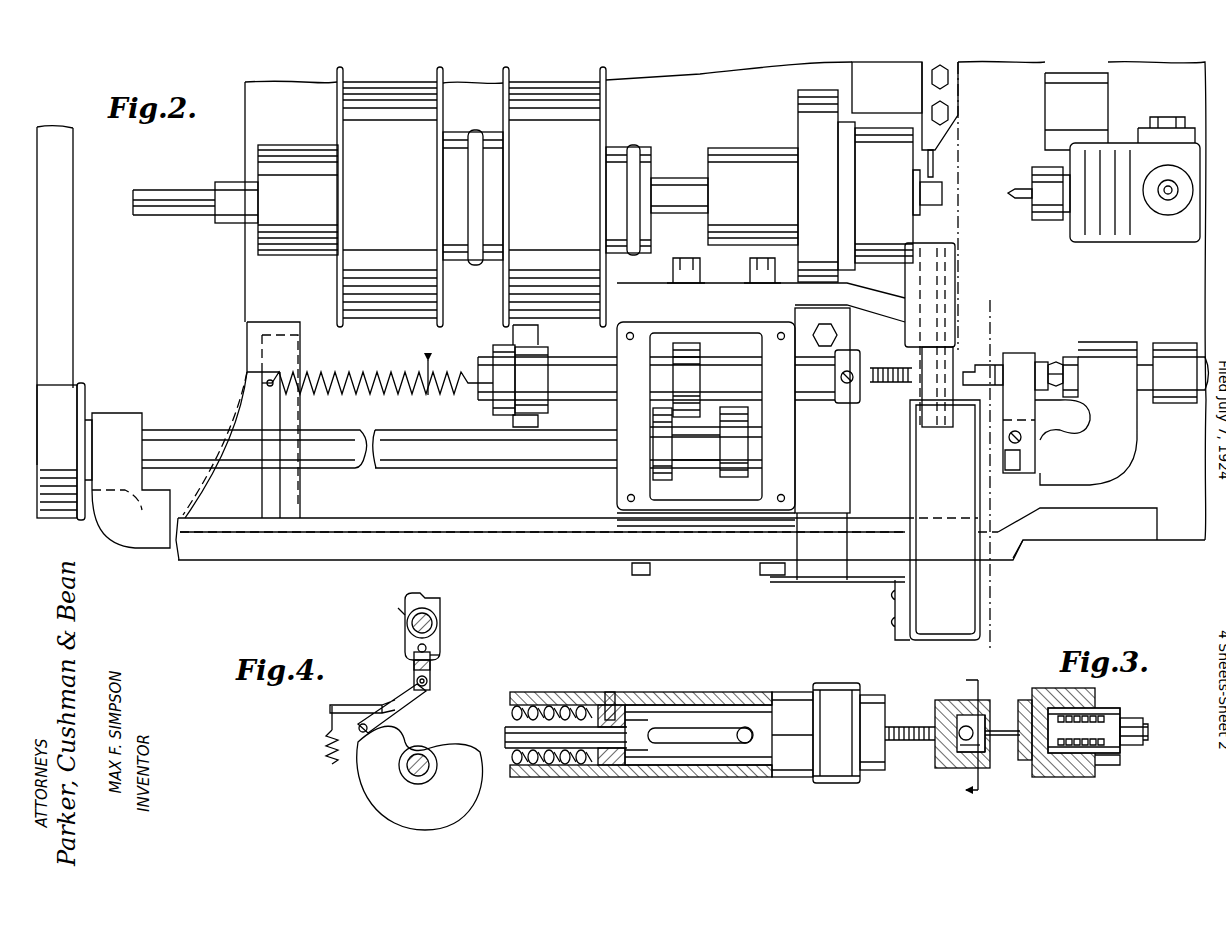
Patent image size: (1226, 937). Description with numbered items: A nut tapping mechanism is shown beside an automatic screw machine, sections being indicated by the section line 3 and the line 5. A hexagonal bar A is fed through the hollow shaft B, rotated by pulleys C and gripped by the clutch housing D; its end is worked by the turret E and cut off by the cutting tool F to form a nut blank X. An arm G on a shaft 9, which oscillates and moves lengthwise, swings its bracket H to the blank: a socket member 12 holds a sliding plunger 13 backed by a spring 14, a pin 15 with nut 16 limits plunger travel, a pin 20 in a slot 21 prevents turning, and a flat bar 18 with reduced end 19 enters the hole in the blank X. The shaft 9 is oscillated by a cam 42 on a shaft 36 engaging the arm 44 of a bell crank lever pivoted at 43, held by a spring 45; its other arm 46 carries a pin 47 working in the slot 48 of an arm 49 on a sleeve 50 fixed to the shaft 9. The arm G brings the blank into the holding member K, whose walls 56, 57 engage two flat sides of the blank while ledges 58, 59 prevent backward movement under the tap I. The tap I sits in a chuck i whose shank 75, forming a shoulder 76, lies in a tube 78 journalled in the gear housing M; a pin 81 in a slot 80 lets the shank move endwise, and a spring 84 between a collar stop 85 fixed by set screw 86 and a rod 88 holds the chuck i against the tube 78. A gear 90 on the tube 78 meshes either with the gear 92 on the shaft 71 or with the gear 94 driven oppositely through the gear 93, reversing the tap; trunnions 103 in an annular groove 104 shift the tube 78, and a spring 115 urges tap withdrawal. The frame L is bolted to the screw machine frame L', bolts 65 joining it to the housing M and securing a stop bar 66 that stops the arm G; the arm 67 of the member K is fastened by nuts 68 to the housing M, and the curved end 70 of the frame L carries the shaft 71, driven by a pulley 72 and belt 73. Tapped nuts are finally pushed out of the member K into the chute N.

In FIG. 2, the section line 3 is at (1150, 338).
In FIG. 2, the section line 5 is at (940, 98).
In FIG. 2, the shaft 9 is at (1072, 357).
In FIG. 4, the shaft 9 is at (432, 622).
In FIG. 2, the socket member 12 is at (1043, 370).
In FIG. 3, the socket member 12 is at (1105, 708).
In FIG. 3, the plunger 13 is at (1000, 731).
In FIG. 3, the spring 14 is at (1108, 760).
In FIG. 2, the pin 15 is at (1062, 395).
In FIG. 3, the pin 15 is at (1132, 718).
In FIG. 2, the nut 16 is at (1049, 385).
In FIG. 3, the nut 16 is at (1142, 740).
In FIG. 2, the flat bar 18 is at (978, 372).
In FIG. 3, the flat bar 18 is at (998, 740).
In FIG. 2, the reduced end 19 is at (968, 365).
In FIG. 3, the reduced end 19 is at (965, 755).
In FIG. 3, the pin 20 is at (1058, 700).
In FIG. 3, the slot 21 is at (1045, 775).
In FIG. 4, the shaft 36 is at (430, 758).
In FIG. 4, the cam 42 is at (420, 778).
In FIG. 4, the pivot 43 is at (430, 680).
In FIG. 4, the arm 44 is at (385, 698).
In FIG. 4, the spring 45 is at (325, 742).
In FIG. 4, the arm 46 is at (414, 665).
In FIG. 4, the pin 47 is at (428, 646).
In FIG. 4, the slot 48 is at (408, 625).
In FIG. 4, the arm 49 is at (434, 655).
In FIG. 4, the sleeve 50 is at (437, 617).
In FIG. 3, the side wall 56 is at (965, 725).
In FIG. 3, the side wall 57 is at (968, 752).
In FIG. 3, the ledge 58 is at (988, 732).
In FIG. 3, the ledge 59 is at (993, 760).
In FIG. 2, the bolts 65 is at (644, 578).
In FIG. 2, the stop bar 66 is at (1077, 533).
In FIG. 2, the rearwardly extending arm 67 is at (872, 294).
In FIG. 2, the bolts or nuts 68 is at (748, 268).
In FIG. 2, the curved end portion 70 is at (115, 418).
In FIG. 2, the shaft 71 is at (440, 457).
In FIG. 2, the pulley 72 is at (88, 390).
In FIG. 2, the belt 73 is at (60, 303).
In FIG. 3, the shank 75 is at (735, 712).
In FIG. 3, the annular shoulder 76 is at (768, 780).
In FIG. 2, the tube 78 is at (656, 378).
In FIG. 3, the tube 78 is at (680, 692).
In FIG. 3, the slot 80 is at (722, 747).
In FIG. 3, the pin 81 is at (742, 743).
In FIG. 3, the spring 84 is at (573, 762).
In FIG. 3, the stop 85 is at (607, 767).
In FIG. 3, the set screw 86 is at (610, 700).
In FIG. 3, the rod 88 is at (530, 750).
In FIG. 2, the gear 90 is at (690, 345).
In FIG. 2, the gear 92 is at (737, 478).
In FIG. 2, the gear 93 is at (658, 456).
In FIG. 2, the gear 94 is at (673, 454).
In FIG. 2, the trunnions 103 is at (542, 410).
In FIG. 2, the annular groove 104 is at (505, 366).
In FIG. 2, the spring 115 is at (377, 369).
In FIG. 2, the bar A is at (158, 191).
In FIG. 2, the hollow shaft B is at (226, 180).
In FIG. 2, the pulleys C is at (393, 84).
In FIG. 2, the housing D is at (780, 150).
In FIG. 2, the turret E is at (1143, 235).
In FIG. 2, the cutting tool F is at (934, 160).
In FIG. 2, the arm G is at (1086, 413).
In FIG. 4, the arm G is at (425, 597).
In FIG. 2, the bracket H is at (1023, 360).
In FIG. 2, the tap I is at (888, 386).
In FIG. 3, the tap I is at (912, 722).
In FIG. 2, the nut holding and positioning member K is at (956, 292).
In FIG. 2, the frame member L is at (690, 553).
In FIG. 2, the frame member L' is at (292, 420).
In FIG. 2, the gear housing M is at (706, 413).
In FIG. 2, the chute N is at (986, 592).
In FIG. 3, the nut blank X is at (945, 760).
In FIG. 2, the chuck i is at (858, 350).
In FIG. 3, the chuck i is at (836, 690).